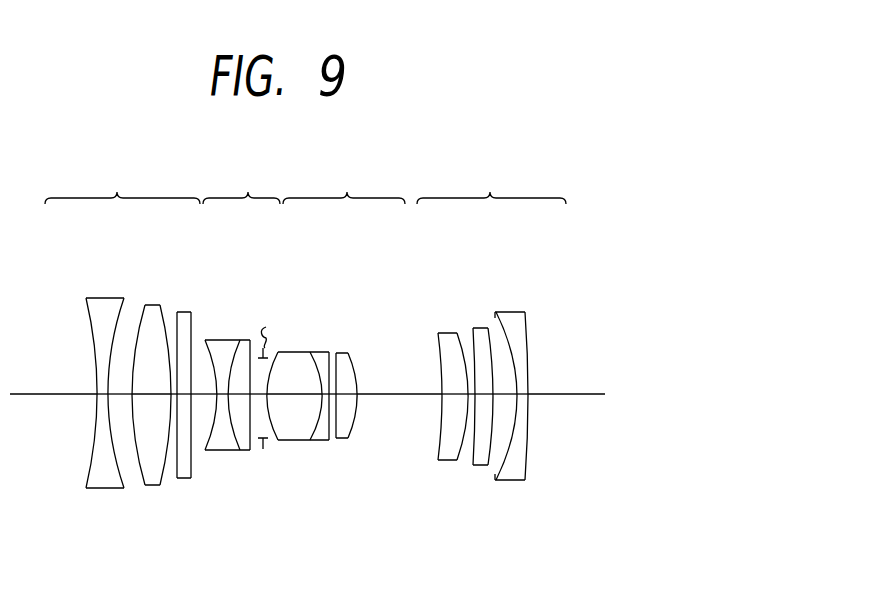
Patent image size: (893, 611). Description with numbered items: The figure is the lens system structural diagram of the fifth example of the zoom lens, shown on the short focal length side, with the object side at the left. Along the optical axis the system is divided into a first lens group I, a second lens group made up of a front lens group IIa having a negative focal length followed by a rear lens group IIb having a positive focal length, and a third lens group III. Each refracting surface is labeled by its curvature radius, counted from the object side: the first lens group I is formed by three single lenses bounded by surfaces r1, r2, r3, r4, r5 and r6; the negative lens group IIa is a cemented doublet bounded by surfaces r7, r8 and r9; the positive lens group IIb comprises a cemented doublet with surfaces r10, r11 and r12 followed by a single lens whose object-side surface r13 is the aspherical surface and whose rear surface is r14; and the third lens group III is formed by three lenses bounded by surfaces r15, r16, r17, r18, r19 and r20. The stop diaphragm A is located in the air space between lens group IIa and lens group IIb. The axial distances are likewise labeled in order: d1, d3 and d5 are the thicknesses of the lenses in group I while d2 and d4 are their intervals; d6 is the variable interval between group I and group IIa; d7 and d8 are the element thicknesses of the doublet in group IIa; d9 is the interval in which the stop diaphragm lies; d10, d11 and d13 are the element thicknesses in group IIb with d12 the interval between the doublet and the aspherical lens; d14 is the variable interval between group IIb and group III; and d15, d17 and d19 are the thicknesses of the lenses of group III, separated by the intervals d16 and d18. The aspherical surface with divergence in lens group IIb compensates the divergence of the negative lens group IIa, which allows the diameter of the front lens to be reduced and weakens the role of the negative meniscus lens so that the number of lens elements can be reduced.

The first lens group I is at (122, 182).
The lens group IIa is at (241, 183).
The lens group IIb is at (344, 183).
The third lens group III is at (491, 183).
The stop diaphragm A is at (264, 375).
The first lens surface r1 is at (85, 310).
The second lens surface r2 is at (120, 301).
The third lens surface r3 is at (146, 317).
The fourth lens surface r4 is at (158, 312).
The fifth lens surface r5 is at (178, 318).
The sixth lens surface r6 is at (191, 313).
The seventh lens surface r7 is at (207, 342).
The eighth lens surface r8 is at (234, 342).
The ninth lens surface r9 is at (248, 342).
The tenth lens surface r10 is at (280, 352).
The eleventh lens surface r11 is at (310, 352).
The twelfth lens surface r12 is at (327, 352).
The thirteenth lens surface r13 is at (340, 353).
The fourteenth lens surface r14 is at (357, 362).
The fifteenth lens surface r15 is at (440, 333).
The sixteenth lens surface r16 is at (460, 333).
The seventeenth lens surface r17 is at (475, 328).
The eighteenth lens surface r18 is at (490, 328).
The nineteenth lens surface r19 is at (500, 312).
The twentieth lens surface r20 is at (527, 312).
The lens thickness d1 is at (102, 395).
The lens interval d2 is at (120, 395).
The lens thickness d3 is at (151, 395).
The lens interval d4 is at (173, 395).
The lens thickness d5 is at (184, 395).
The lens interval d6 is at (204, 395).
The lens thickness d7 is at (221, 395).
The lens thickness d8 is at (238, 395).
The lens interval d9 is at (258, 395).
The lens thickness d10 is at (295, 395).
The lens thickness d11 is at (325, 395).
The lens interval d12 is at (332, 395).
The lens thickness d13 is at (346, 395).
The lens interval d14 is at (390, 395).
The lens thickness d15 is at (455, 395).
The lens interval d16 is at (470, 395).
The lens thickness d17 is at (484, 395).
The lens interval d18 is at (505, 395).
The lens thickness d19 is at (522, 395).